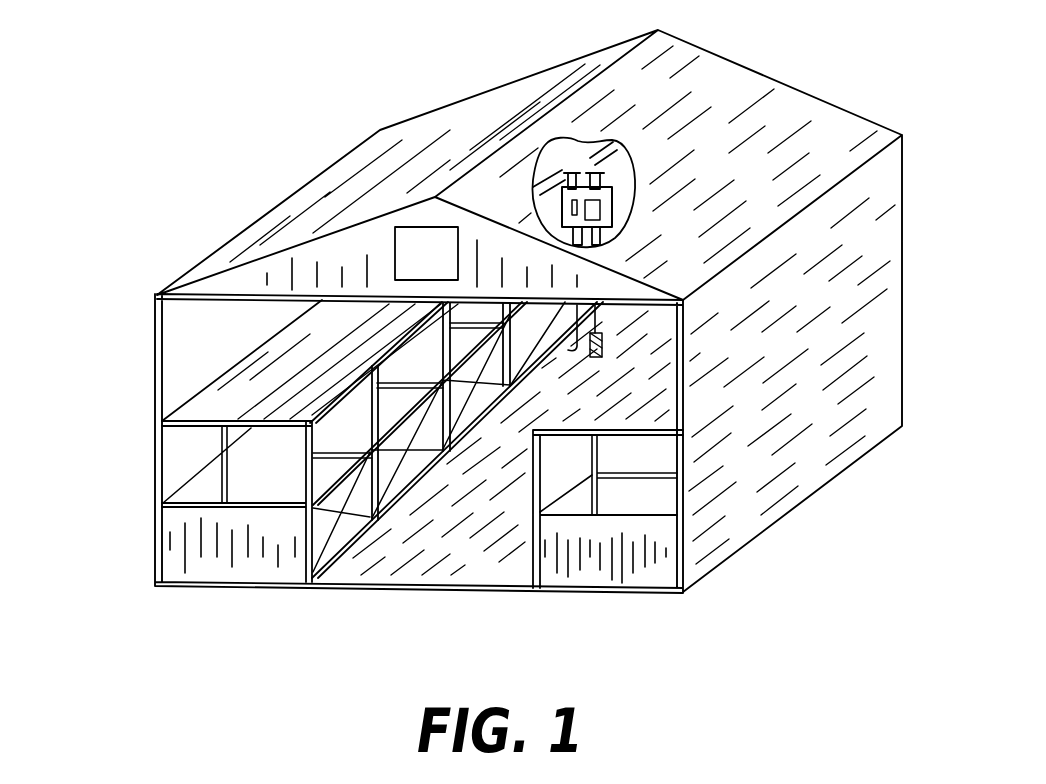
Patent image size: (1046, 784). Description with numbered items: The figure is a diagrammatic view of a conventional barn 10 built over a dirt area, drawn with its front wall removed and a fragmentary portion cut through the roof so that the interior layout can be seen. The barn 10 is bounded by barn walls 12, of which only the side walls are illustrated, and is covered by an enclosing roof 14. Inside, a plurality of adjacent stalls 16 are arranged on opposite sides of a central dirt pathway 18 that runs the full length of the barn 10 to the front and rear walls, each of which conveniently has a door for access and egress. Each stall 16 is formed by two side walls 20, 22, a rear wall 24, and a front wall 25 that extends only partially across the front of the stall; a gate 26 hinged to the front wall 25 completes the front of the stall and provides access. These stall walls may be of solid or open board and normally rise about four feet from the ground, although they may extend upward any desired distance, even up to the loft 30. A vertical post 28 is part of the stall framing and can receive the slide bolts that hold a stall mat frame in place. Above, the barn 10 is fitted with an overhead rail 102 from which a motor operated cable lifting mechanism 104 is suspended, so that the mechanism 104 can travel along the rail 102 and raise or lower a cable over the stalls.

The barn 10 is at (116, 456).
The barn walls 12 is at (155, 392).
The roof 14 is at (800, 88).
The stalls 16 is at (508, 410).
The central dirt pathway 18 is at (437, 516).
The stall side wall 20 is at (218, 573).
The stall side wall 22 is at (247, 468).
The stall rear wall 24 is at (170, 473).
The stall front wall 25 is at (463, 440).
The gate 26 is at (531, 344).
The vertical post 28 is at (445, 367).
The loft 30 is at (256, 373).
The overhead rail 102 is at (633, 126).
The motor operated cable lifting mechanism 104 is at (614, 231).